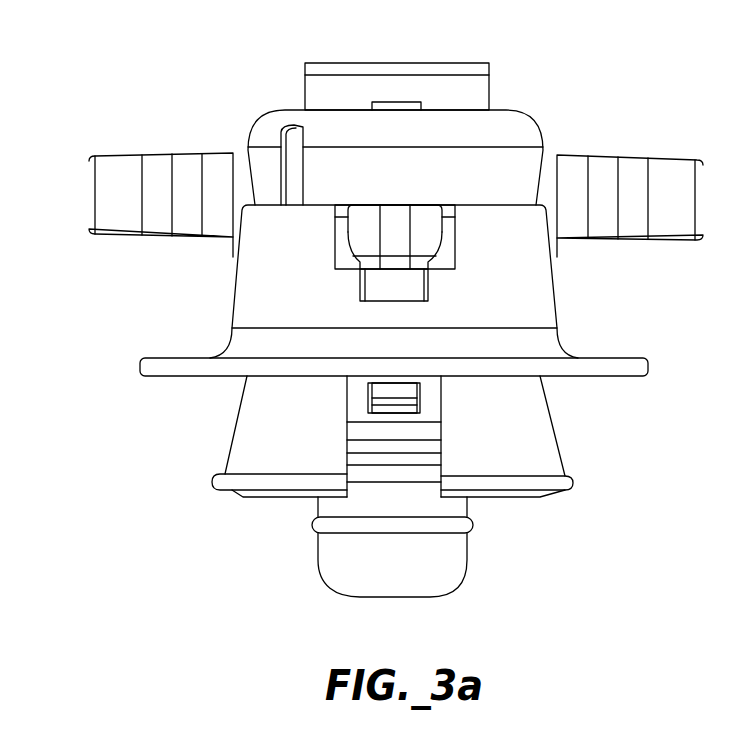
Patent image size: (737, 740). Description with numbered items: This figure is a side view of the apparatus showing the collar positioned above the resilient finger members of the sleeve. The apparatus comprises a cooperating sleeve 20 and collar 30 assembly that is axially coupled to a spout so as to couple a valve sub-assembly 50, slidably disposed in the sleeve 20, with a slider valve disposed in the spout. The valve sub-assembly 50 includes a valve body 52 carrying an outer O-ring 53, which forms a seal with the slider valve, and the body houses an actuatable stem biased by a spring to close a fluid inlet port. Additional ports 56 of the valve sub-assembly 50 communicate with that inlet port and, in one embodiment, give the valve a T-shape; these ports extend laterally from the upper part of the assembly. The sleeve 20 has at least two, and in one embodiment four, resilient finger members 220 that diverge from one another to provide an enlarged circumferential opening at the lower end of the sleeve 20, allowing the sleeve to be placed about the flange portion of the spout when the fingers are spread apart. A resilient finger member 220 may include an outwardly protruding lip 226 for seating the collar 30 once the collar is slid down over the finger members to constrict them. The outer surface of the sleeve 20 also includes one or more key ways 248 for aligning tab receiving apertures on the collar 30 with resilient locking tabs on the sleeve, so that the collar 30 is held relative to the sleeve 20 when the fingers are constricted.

The sleeve 20 is at (517, 138).
The collar 30 is at (548, 320).
The valve sub-assembly 50 is at (466, 96).
The valve body 52 is at (413, 500).
The outer O-ring 53 is at (312, 523).
The additional ports 56 is at (120, 165).
The resilient finger members 220 is at (245, 446).
The outwardly protruding lip 226 is at (577, 483).
The key way 248 is at (298, 132).